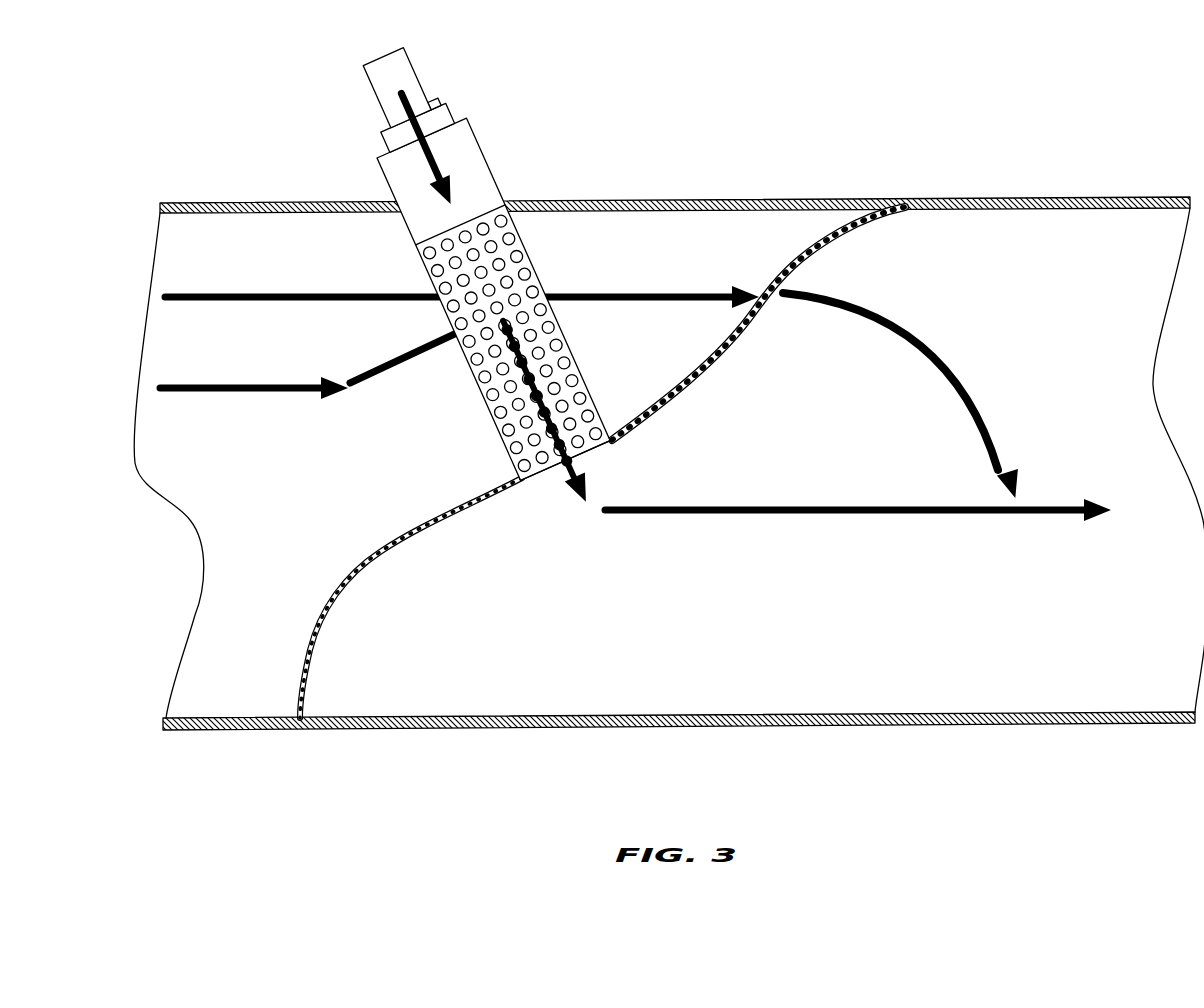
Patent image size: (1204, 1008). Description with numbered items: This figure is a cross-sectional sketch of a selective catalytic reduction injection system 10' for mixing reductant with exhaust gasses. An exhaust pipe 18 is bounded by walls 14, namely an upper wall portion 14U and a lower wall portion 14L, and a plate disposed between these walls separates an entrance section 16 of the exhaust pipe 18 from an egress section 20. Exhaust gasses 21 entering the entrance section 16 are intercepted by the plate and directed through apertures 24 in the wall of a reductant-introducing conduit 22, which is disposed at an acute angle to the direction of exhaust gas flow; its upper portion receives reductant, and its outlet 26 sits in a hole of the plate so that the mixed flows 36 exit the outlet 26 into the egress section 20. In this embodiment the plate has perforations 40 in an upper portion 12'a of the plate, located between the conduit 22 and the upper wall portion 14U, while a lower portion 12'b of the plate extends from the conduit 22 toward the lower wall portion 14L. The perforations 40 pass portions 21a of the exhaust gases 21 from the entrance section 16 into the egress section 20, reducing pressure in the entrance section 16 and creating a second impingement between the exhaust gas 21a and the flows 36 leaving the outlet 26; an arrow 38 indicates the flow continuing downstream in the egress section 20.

The exhaust aftertreatment mixing system 10' is at (900, 290).
The walls 14 is at (205, 204).
The upper wall portion 14U is at (822, 200).
The lower wall portion 14L is at (500, 730).
The entrance section 16 is at (251, 503).
The exhaust pipe 18 is at (1050, 735).
The egress section 20 is at (1051, 403).
The exhaust gasses 21 is at (205, 395).
The portions of the exhaust gases 21a is at (578, 285).
The reductant-introducing conduit 22 is at (418, 273).
The apertures 24 is at (585, 392).
The outlet 26 is at (614, 460).
The mixed flows 36 is at (582, 505).
The mixed exhaust flow 38 is at (830, 516).
The perforations 40 is at (800, 262).
The upper portion of the plate 12'a is at (778, 323).
The lower baffle 12'b is at (411, 598).